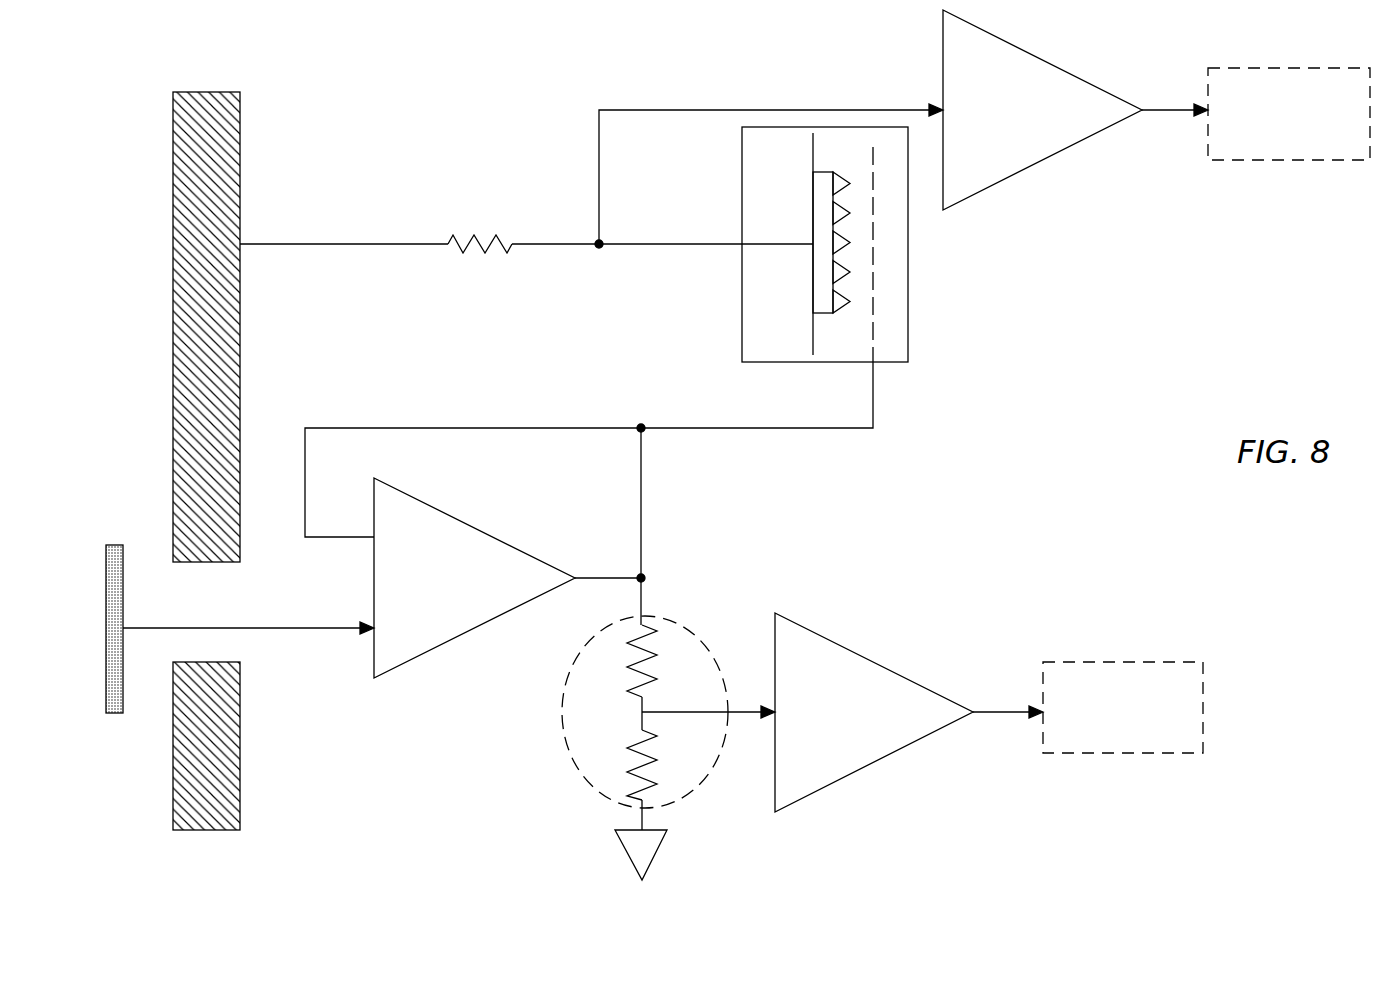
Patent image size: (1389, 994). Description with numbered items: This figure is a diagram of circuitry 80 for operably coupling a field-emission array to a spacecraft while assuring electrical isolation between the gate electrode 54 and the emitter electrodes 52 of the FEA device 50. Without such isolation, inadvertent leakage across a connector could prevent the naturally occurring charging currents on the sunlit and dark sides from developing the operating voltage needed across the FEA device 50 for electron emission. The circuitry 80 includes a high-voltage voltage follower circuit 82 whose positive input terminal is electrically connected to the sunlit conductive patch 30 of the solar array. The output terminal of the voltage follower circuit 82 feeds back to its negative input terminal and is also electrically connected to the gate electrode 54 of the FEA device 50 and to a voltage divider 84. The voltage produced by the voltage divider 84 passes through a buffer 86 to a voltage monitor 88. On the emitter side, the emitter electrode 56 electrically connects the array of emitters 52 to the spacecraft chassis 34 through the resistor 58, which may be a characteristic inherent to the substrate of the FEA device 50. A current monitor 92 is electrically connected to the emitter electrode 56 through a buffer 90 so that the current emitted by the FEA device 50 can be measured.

The sunlit conductive patch 30 is at (110, 543).
The spacecraft chassis 34 is at (225, 135).
The FEA device 50 is at (908, 287).
The emitter electrodes 52 is at (847, 170).
The gate electrode 54 is at (873, 235).
The emitter electrode 56 is at (647, 243).
The resistor 58 is at (475, 237).
The circuitry 80 is at (386, 96).
The voltage follower circuit 82 is at (432, 590).
The voltage divider 84 is at (688, 630).
The buffer 86 is at (853, 672).
The voltage monitor 88 is at (1148, 658).
The buffer 90 is at (1022, 102).
The current monitor 92 is at (1293, 67).